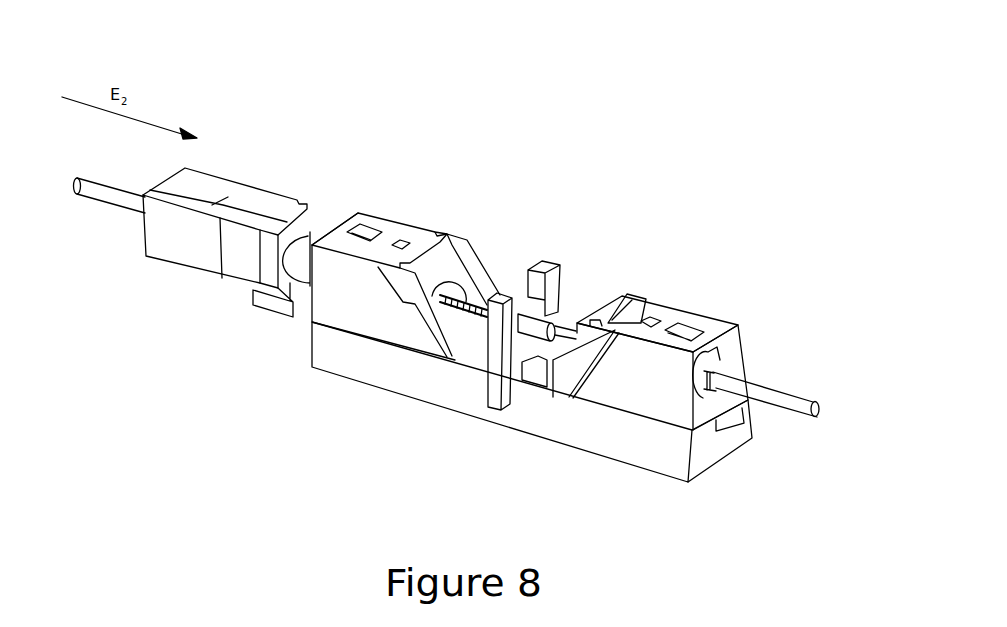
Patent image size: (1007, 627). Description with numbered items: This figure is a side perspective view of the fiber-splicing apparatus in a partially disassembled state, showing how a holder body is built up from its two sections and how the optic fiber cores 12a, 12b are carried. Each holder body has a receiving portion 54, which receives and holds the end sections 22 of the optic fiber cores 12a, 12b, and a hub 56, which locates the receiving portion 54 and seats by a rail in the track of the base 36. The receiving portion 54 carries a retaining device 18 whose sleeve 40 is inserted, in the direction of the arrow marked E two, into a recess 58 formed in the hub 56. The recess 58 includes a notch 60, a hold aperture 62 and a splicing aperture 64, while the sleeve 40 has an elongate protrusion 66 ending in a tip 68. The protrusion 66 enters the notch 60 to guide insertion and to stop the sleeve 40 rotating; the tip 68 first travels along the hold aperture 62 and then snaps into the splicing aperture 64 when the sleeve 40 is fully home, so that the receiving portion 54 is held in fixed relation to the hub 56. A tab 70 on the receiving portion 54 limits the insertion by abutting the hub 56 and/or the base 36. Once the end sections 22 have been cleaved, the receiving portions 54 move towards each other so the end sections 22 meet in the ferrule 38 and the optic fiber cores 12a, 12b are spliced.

The optic fiber core 12a is at (802, 407).
The optic fiber core 12b is at (105, 190).
The retaining device 18 is at (203, 193).
The end section 22 is at (452, 297).
The base 36 is at (428, 368).
The ferrule 38 is at (534, 320).
The sleeve 40 is at (298, 252).
The receiving portion 54 is at (204, 290).
The hub 56 is at (361, 312).
The recess 58 is at (724, 368).
The notch 60 is at (733, 352).
The hold aperture 62 is at (687, 335).
The splicing aperture 64 is at (656, 321).
The elongate protrusion 66 is at (323, 230).
The tip 68 is at (366, 226).
The tab 70 is at (275, 307).